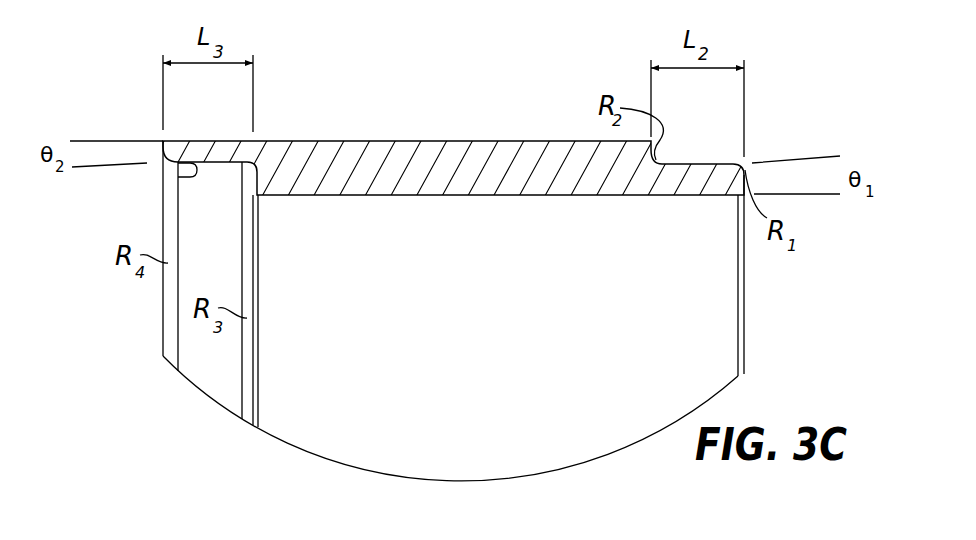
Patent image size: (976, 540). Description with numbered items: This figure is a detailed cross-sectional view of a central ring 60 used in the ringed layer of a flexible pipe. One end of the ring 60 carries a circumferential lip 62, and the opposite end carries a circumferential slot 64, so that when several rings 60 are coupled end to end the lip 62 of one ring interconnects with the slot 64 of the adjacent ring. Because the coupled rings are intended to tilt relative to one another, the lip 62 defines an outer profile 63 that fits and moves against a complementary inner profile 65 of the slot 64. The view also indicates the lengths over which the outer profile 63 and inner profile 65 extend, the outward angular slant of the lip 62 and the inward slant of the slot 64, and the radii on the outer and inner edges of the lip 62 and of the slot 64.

The central ring 60 is at (435, 140).
The circumferential lip 62 is at (752, 150).
The outer profile 63 is at (690, 160).
The circumferential slot 64 is at (155, 124).
The inner profile 65 is at (176, 177).